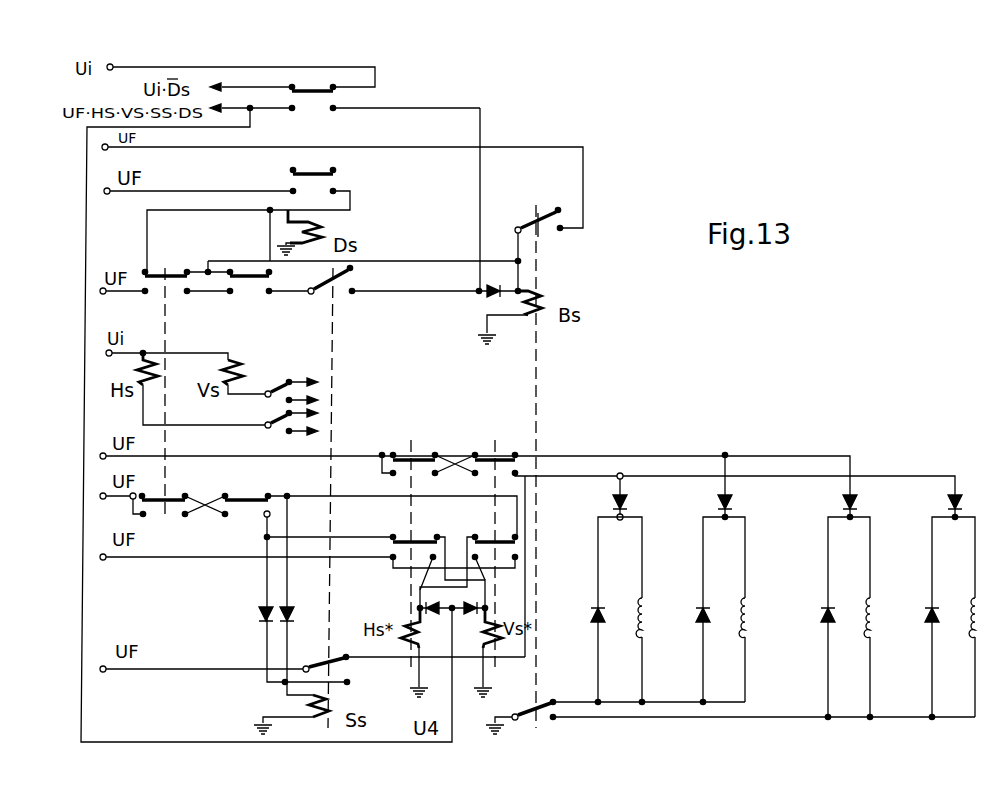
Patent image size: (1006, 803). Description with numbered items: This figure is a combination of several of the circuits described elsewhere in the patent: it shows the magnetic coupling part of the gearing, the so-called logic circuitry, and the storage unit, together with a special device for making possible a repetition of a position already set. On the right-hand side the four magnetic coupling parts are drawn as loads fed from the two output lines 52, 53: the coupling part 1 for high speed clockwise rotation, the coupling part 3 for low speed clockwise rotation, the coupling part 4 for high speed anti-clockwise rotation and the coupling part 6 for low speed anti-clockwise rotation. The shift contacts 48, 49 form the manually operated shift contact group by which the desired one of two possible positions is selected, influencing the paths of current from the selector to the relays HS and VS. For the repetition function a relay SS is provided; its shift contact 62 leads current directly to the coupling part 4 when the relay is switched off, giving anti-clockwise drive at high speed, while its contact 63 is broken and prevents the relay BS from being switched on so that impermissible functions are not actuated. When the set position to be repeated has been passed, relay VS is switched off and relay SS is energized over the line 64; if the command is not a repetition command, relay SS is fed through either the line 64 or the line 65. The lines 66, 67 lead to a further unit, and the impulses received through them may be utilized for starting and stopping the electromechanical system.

The line 66 is at (273, 80).
The line 67 is at (345, 101).
The contact of relay SS 63 is at (350, 280).
The shift contact 48 is at (291, 380).
The shift contact 49 is at (290, 432).
The output line 52 is at (489, 454).
The output line 53 is at (604, 495).
The line 65 is at (254, 598).
The line 64 is at (299, 598).
The shift contact of relay SS 62 is at (341, 671).
The coupling part 4 is at (628, 609).
The coupling part 1 is at (730, 609).
The coupling part 6 is at (858, 617).
The coupling part 3 is at (962, 617).